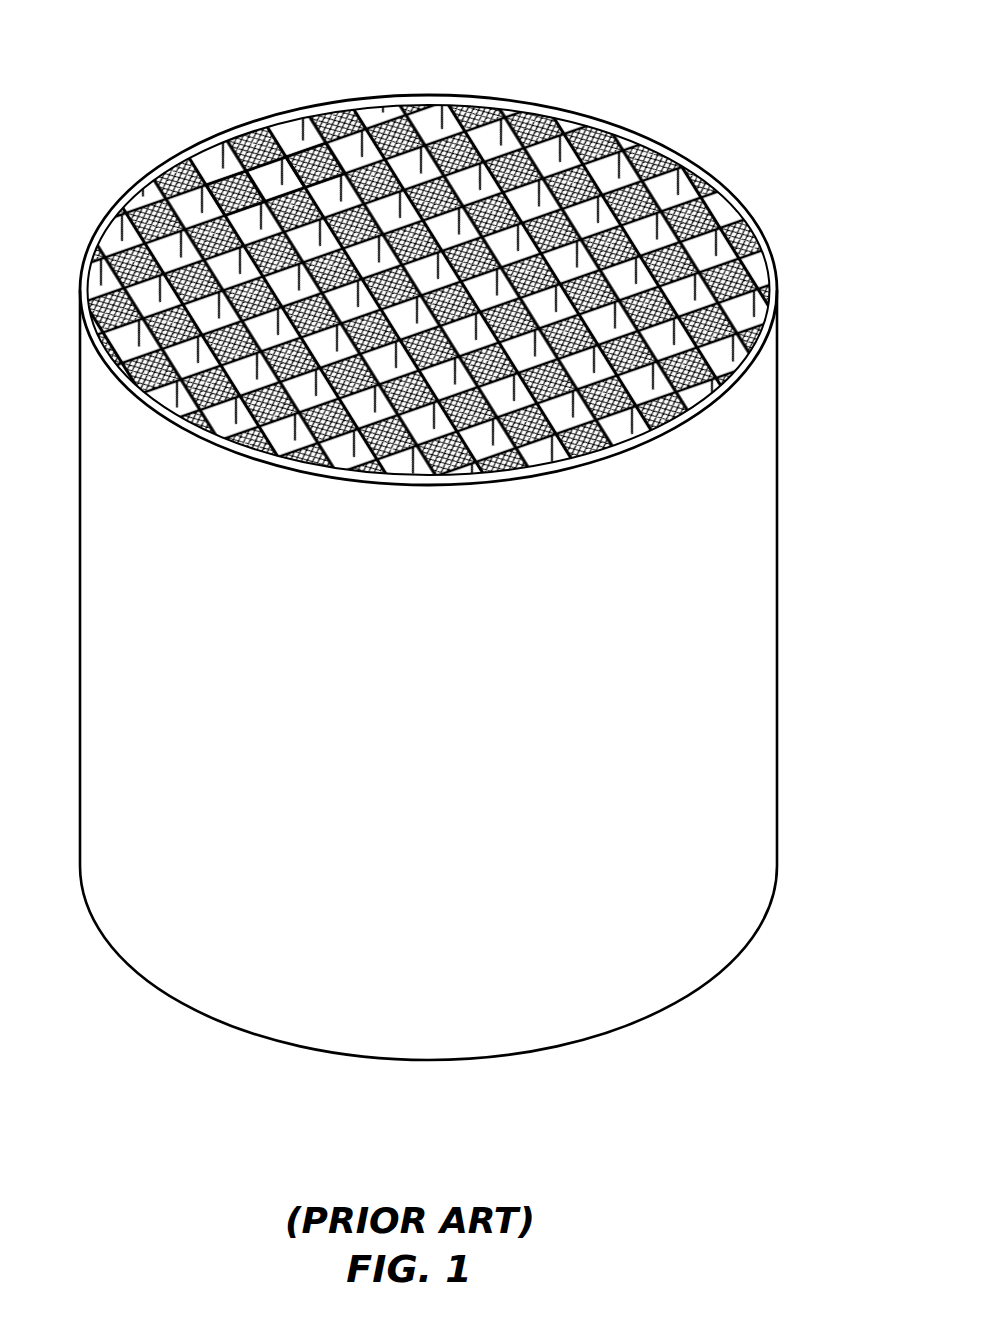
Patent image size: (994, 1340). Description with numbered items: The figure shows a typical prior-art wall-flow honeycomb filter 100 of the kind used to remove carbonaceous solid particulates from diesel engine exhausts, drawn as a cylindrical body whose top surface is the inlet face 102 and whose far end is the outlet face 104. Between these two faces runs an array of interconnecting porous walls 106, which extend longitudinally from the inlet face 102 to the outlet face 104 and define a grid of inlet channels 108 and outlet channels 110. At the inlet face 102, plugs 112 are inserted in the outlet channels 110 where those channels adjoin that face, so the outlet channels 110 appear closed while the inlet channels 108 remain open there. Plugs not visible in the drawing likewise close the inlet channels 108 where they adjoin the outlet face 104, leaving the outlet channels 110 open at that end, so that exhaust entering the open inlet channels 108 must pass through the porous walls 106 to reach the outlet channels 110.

The wall-flow honeycomb filter 100 is at (438, 554).
The inlet face 102 is at (705, 172).
The outlet face 104 is at (610, 1027).
The interconnecting porous walls 106 is at (542, 162).
The inlet channels 108 is at (282, 177).
The outlet channels 110 is at (215, 185).
The plugs 112 is at (333, 160).